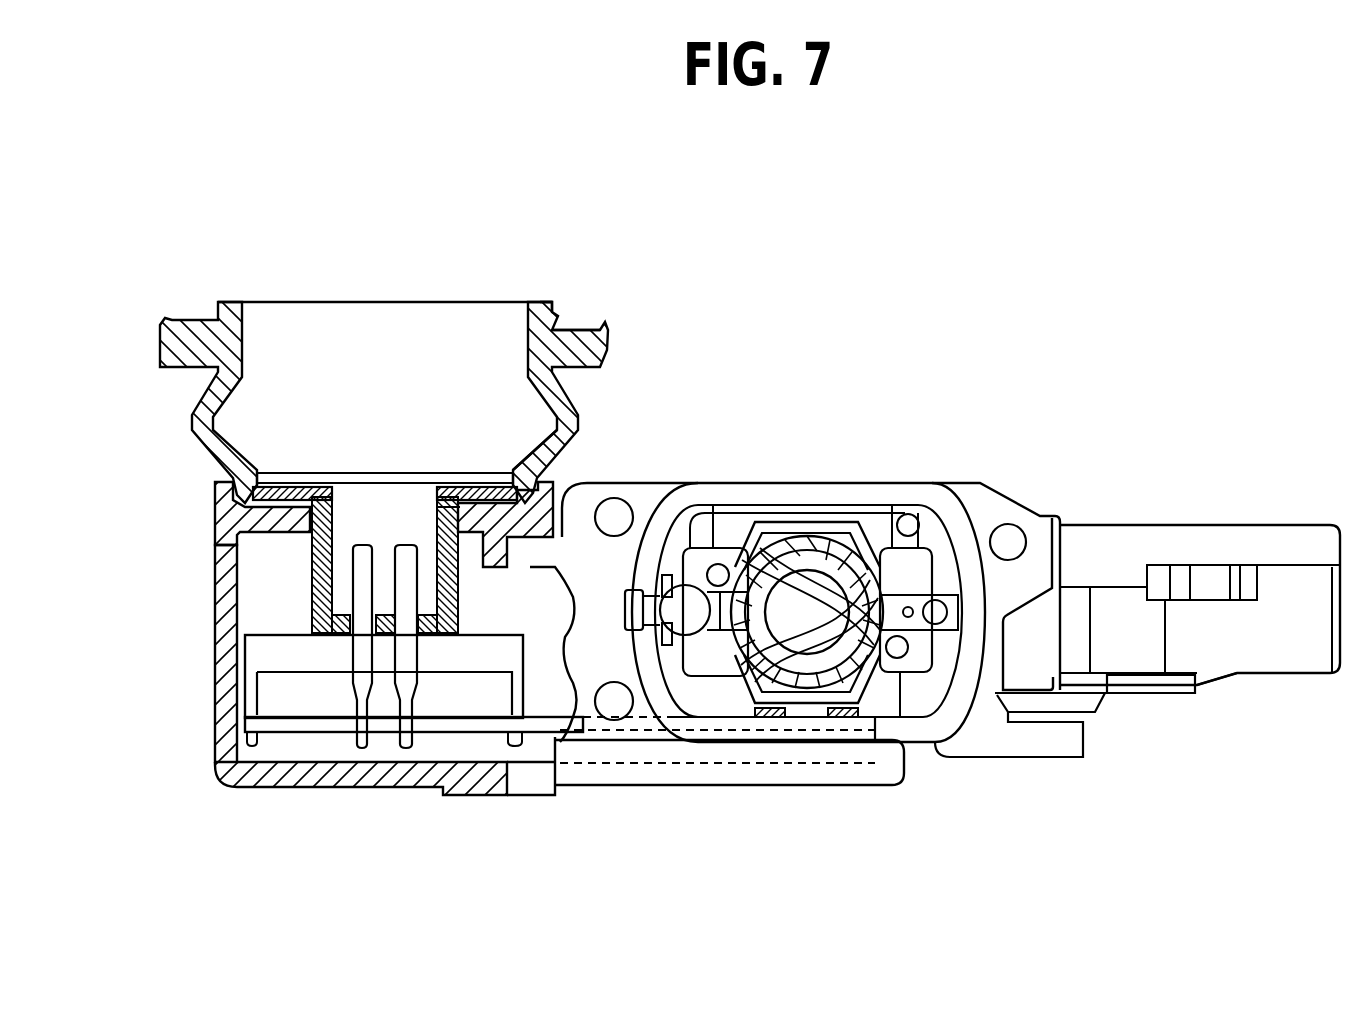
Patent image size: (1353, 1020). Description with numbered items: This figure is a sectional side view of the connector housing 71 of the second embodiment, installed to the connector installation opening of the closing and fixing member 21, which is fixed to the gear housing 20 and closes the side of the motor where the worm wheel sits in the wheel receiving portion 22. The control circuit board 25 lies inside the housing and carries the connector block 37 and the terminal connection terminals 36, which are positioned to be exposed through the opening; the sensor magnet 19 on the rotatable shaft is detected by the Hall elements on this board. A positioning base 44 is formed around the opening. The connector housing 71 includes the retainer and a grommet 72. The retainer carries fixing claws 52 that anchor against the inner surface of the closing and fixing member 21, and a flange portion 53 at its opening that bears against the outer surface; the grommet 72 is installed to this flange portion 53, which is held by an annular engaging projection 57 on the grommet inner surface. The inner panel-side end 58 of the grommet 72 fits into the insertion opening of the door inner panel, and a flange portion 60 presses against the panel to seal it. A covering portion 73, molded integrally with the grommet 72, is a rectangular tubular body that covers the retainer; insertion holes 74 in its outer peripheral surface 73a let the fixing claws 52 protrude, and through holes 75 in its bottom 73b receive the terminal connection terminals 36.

The sensor magnet 19 is at (800, 522).
The gear housing 20 is at (1092, 523).
The closing and fixing member 21 is at (258, 788).
The wheel receiving portion 22 is at (1273, 671).
The control circuit board 25 is at (542, 722).
The terminal connection terminals 36 is at (362, 750).
The connector block 37 is at (524, 670).
The positioning base 44 is at (216, 484).
The fixing claws 52 is at (304, 542).
The flange portion 53 is at (306, 486).
The engaging projection 57 is at (506, 470).
The inner panel-side end 58 is at (540, 304).
The flange portion 60 is at (603, 350).
The connector housing 71 is at (665, 398).
The grommet 72 is at (578, 424).
The covering portion 73 is at (458, 592).
The outer peripheral surface 73a is at (306, 632).
The bottom 73b is at (442, 632).
The insertion holes 74 is at (310, 548).
The through holes 75 is at (368, 633).